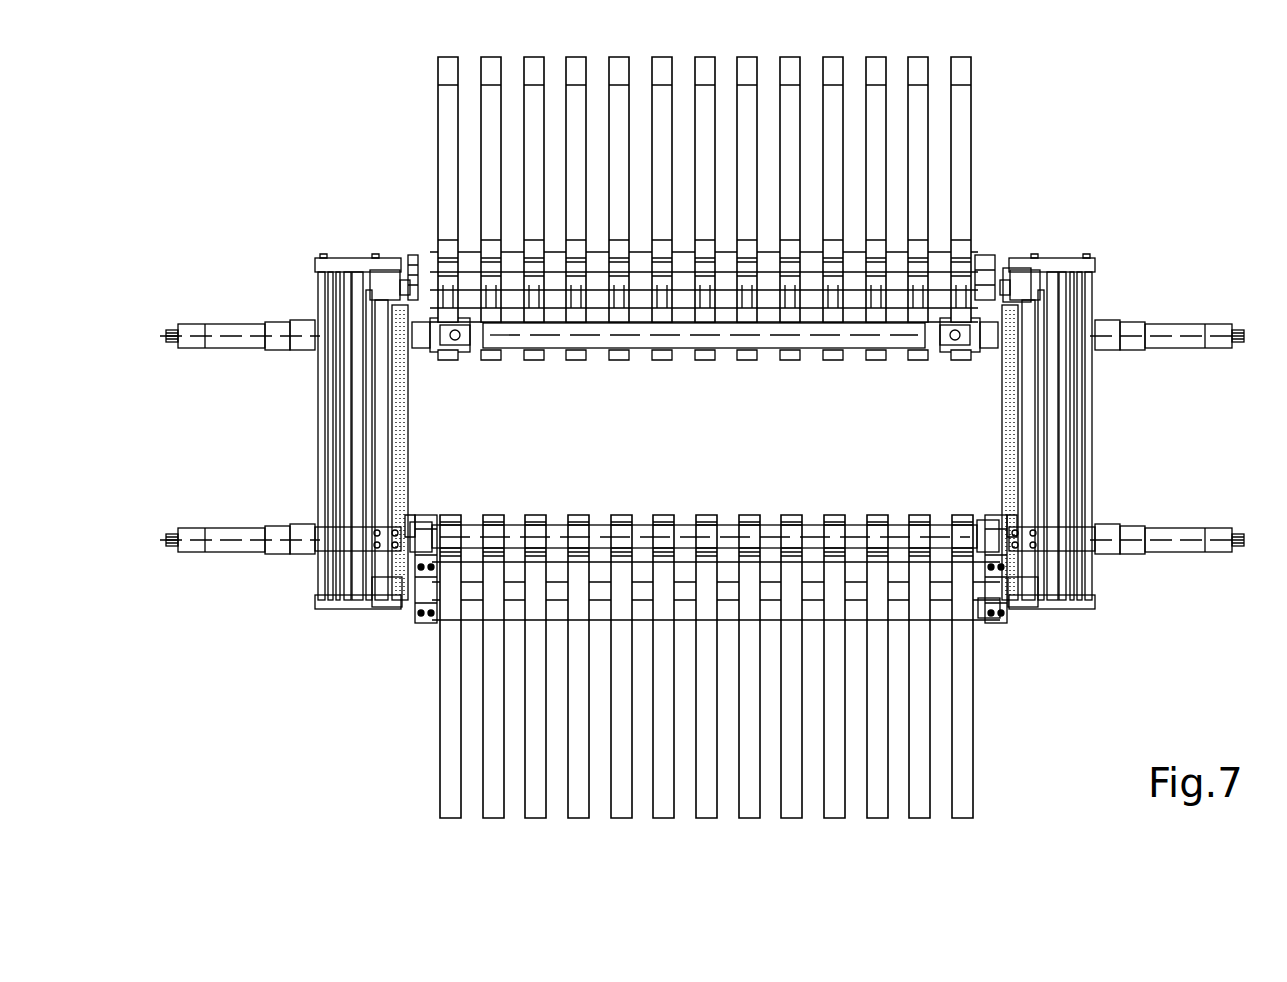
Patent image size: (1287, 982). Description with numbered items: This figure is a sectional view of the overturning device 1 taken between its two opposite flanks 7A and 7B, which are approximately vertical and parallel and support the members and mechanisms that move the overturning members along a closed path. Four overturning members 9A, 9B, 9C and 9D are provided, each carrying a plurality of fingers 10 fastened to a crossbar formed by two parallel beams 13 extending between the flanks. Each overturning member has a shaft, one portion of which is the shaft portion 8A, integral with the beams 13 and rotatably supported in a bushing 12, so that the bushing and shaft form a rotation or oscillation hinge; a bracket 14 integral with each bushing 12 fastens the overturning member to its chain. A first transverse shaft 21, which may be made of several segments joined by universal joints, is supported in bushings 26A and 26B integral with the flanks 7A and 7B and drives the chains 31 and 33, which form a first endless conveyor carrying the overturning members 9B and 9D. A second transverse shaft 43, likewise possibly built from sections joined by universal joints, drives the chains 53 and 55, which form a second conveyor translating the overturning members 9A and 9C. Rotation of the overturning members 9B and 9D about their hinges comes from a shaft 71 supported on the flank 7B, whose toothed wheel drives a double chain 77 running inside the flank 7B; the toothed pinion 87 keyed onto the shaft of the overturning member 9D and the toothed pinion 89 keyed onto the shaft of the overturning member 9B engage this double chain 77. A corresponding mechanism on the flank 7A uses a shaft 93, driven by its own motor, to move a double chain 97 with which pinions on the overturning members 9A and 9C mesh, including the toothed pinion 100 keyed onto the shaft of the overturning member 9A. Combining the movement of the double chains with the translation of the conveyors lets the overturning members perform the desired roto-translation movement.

The device 1 is at (702, 437).
The flank 7A is at (1052, 390).
The flank 7B is at (357, 414).
The shaft portion 8A is at (1007, 268).
The overturning member 9A is at (995, 155).
The overturning member 9B is at (700, 594).
The overturning member 9C is at (998, 777).
The overturning member 9D is at (978, 260).
The fingers 10 is at (960, 122).
The bushing 12 is at (392, 270).
The beams 13 is at (688, 522).
The bracket 14 is at (340, 258).
The first transverse shaft 21 is at (233, 348).
The bushing 26A is at (1030, 355).
The bushing 26B is at (377, 350).
The chain 31 is at (1070, 428).
The chain 33 is at (318, 437).
The transverse shaft 43 is at (1180, 348).
The chain 53 is at (1072, 458).
The chain 55 is at (344, 489).
The shaft 71 is at (233, 554).
The double chain 77 is at (405, 435).
The toothed pinion 87 is at (420, 255).
The toothed pinion 89 is at (418, 605).
The shaft 93 is at (1180, 553).
The double chain 97 is at (1008, 455).
The toothed pinion 100 is at (1000, 510).